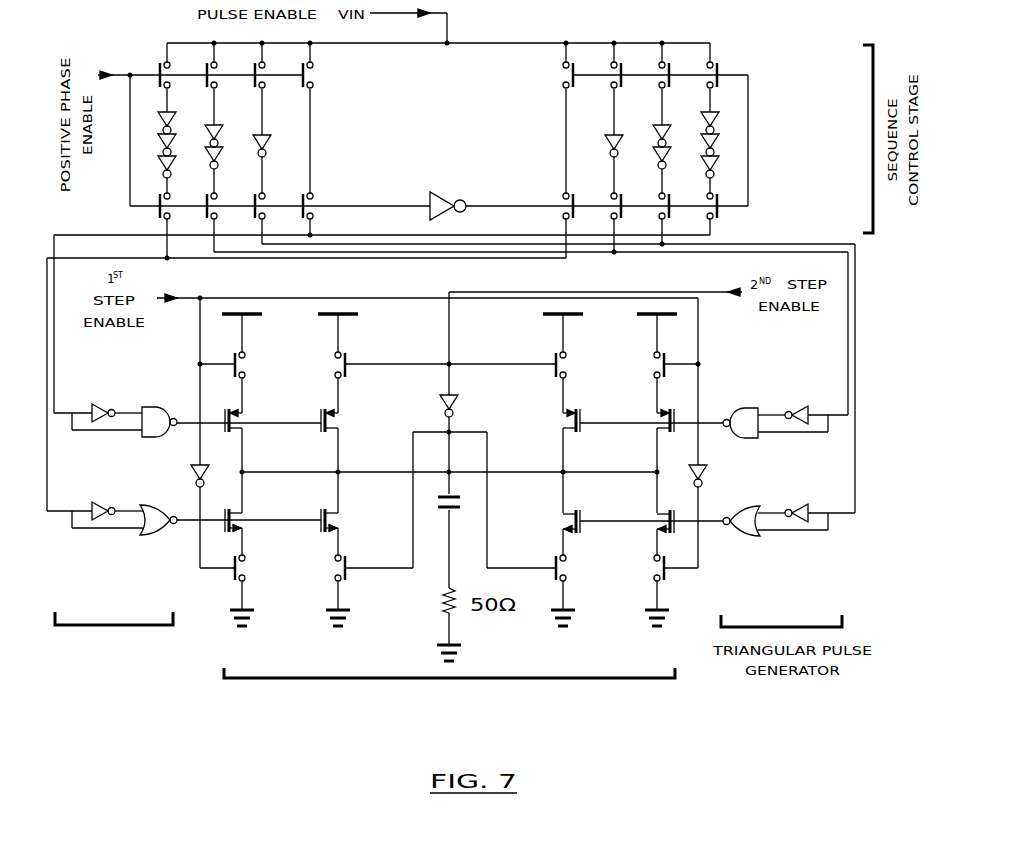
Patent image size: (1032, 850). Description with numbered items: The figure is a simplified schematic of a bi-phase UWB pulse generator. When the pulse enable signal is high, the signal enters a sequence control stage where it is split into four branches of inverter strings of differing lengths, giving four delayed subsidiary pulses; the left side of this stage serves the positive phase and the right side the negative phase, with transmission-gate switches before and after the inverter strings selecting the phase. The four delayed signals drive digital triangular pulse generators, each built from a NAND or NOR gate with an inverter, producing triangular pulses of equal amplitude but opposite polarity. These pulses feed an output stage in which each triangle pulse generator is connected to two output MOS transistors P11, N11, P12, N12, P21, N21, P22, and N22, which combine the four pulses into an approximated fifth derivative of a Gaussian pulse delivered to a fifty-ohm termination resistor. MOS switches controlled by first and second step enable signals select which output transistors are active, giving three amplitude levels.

The output MOS transistor P11 is at (257, 393).
The output MOS transistor P12 is at (355, 393).
The output MOS transistor P22 is at (548, 393).
The output MOS transistor P21 is at (643, 393).
The output MOS transistor N11 is at (259, 549).
The output MOS transistor N12 is at (357, 549).
The output MOS transistor N22 is at (546, 549).
The output MOS transistor N21 is at (641, 549).